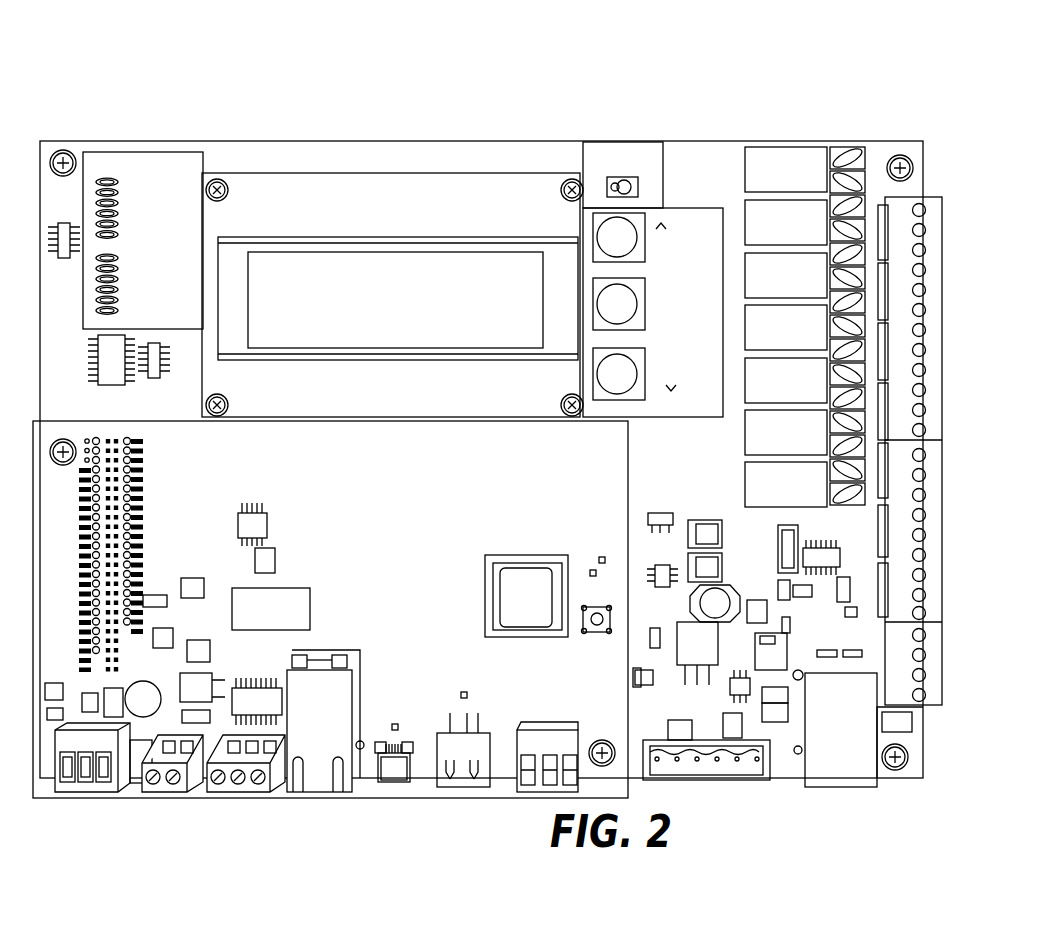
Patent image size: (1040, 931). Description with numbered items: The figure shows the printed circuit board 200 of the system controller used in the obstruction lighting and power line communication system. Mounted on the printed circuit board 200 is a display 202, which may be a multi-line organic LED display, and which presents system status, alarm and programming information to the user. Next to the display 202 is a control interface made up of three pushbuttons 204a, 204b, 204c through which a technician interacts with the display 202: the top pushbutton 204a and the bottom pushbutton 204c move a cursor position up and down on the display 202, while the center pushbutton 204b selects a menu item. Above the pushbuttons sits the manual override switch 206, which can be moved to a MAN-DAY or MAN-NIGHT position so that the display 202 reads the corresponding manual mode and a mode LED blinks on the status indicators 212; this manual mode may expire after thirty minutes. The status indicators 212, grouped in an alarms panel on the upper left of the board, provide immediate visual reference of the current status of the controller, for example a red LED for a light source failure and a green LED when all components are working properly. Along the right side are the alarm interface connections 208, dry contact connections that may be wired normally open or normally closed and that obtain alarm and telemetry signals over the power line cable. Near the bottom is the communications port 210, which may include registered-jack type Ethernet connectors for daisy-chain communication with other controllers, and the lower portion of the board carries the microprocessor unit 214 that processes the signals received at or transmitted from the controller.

The printed circuit board 200 is at (948, 56).
The display 202 is at (523, 170).
The top pushbutton 204a is at (700, 204).
The center pushbutton 204b is at (689, 209).
The bottom pushbutton 204c is at (678, 254).
The manual override switch 206 is at (624, 135).
The alarm interface connections 208 is at (930, 194).
The communications port 210 is at (848, 792).
The status indicators 212 is at (152, 157).
The microprocessor unit 214 is at (368, 794).